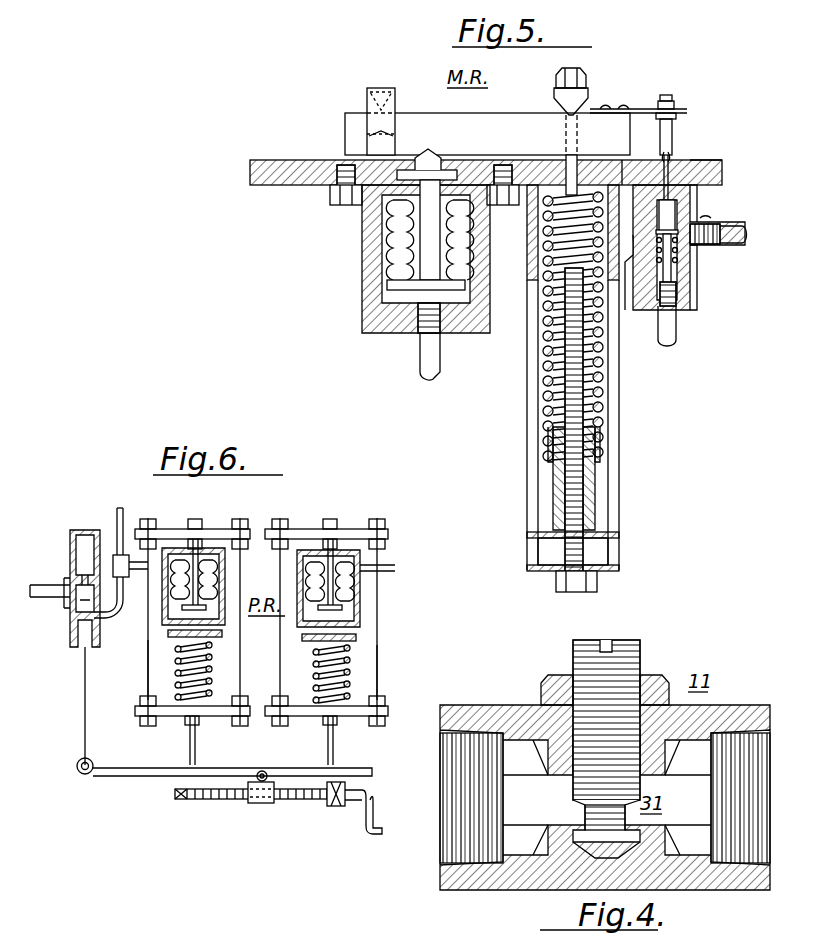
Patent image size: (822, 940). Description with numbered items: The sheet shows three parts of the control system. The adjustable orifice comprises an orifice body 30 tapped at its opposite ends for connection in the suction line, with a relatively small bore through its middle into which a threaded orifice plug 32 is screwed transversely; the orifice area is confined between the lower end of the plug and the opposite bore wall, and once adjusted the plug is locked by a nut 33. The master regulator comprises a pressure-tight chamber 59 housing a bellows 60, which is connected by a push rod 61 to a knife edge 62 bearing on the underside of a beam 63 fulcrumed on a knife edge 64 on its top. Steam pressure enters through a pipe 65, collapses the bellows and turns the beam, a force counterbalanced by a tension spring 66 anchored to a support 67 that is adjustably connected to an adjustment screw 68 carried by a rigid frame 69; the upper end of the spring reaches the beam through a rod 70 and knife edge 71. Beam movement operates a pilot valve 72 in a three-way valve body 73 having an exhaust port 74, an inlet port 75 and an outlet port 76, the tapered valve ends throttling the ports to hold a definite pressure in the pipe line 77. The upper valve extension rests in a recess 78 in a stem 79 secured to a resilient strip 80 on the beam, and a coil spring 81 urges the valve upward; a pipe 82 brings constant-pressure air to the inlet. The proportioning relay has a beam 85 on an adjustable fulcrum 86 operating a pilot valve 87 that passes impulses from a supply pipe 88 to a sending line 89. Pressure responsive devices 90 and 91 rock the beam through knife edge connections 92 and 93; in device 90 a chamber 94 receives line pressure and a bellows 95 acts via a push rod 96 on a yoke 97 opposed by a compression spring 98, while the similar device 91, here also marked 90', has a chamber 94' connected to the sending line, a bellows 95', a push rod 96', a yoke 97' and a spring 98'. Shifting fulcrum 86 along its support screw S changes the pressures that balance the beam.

In FIG. 4, the orifice body 30 is at (518, 705).
In FIG. 4, the orifice plug 32 is at (640, 655).
In FIG. 4, the nut 33 is at (553, 683).
In FIG. 5, the pressure-tight chamber 59 is at (388, 298).
In FIG. 5, the bellows 60 is at (392, 265).
In FIG. 5, the push rod 61 is at (426, 243).
In FIG. 5, the knife edge 62 is at (430, 157).
In FIG. 5, the beam 63 is at (508, 139).
In FIG. 5, the knife edge 64 is at (378, 101).
In FIG. 5, the pipe 65 is at (426, 357).
In FIG. 5, the tension spring 66 is at (606, 396).
In FIG. 5, the support 67 is at (595, 496).
In FIG. 5, the adjustment screw 68 is at (597, 553).
In FIG. 5, the rigid frame 69 is at (527, 549).
In FIG. 5, the rod 70 is at (572, 70).
In FIG. 5, the knife edge 71 is at (587, 98).
In FIG. 5, the pilot valve 72 is at (670, 213).
In FIG. 5, the three-way valve body 73 is at (683, 262).
In FIG. 5, the exhaust port 74 is at (660, 180).
In FIG. 5, the inlet port 75 is at (680, 290).
In FIG. 5, the outlet port 76 is at (695, 228).
In FIG. 5, the pipe line 77 is at (740, 240).
In FIG. 6, the pipe line 77 is at (390, 566).
In FIG. 5, the recess 78 is at (676, 150).
In FIG. 5, the stem 79 is at (661, 134).
In FIG. 5, the resilient strip 80 is at (650, 108).
In FIG. 5, the coil spring 81 is at (660, 255).
In FIG. 5, the pipe 82 is at (672, 333).
In FIG. 6, the beam 85 is at (110, 778).
In FIG. 6, the adjustable fulcrum 86 is at (256, 776).
In FIG. 6, the pilot valve 87 is at (85, 562).
In FIG. 6, the supply pipe 88 is at (40, 592).
In FIG. 6, the sending line 89 is at (118, 515).
In FIG. 6, the pressure responsive device 90 is at (342, 607).
In FIG. 6, the pressure responsive device 90' is at (165, 633).
In FIG. 6, the pressure responsive device 91 is at (212, 511).
In FIG. 6, the knife edge connection 92 is at (336, 748).
In FIG. 6, the knife edge connection 93 is at (196, 752).
In FIG. 6, the chamber 94 is at (360, 588).
In FIG. 6, the chamber 94' is at (217, 586).
In FIG. 6, the bellows 95 is at (365, 581).
In FIG. 6, the bellows 95' is at (222, 576).
In FIG. 6, the push rod 96 is at (346, 549).
In FIG. 6, the push rod 96' is at (222, 549).
In FIG. 6, the yoke 97 is at (399, 666).
In FIG. 6, the yoke 97' is at (127, 670).
In FIG. 6, the compression spring 98 is at (367, 674).
In FIG. 6, the compression spring 98' is at (180, 671).
In FIG. 6, the support screw S is at (228, 800).